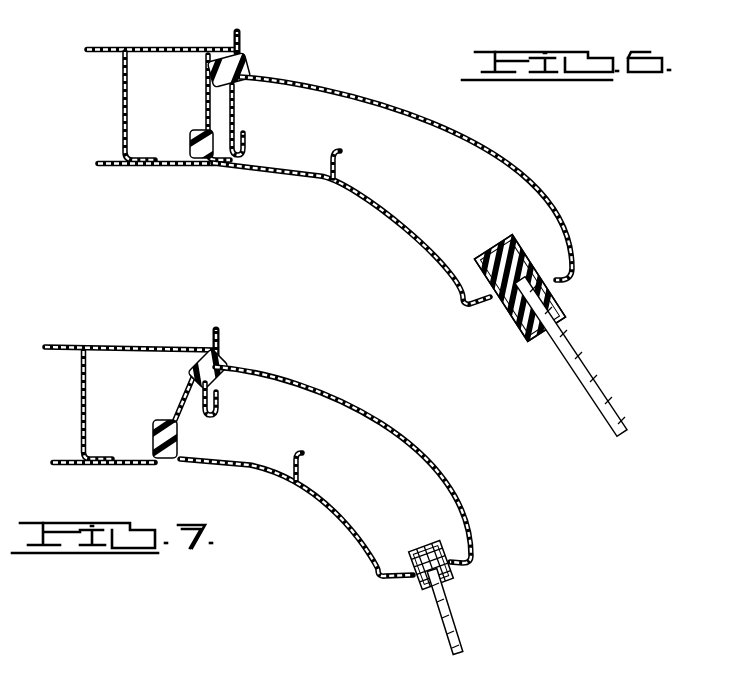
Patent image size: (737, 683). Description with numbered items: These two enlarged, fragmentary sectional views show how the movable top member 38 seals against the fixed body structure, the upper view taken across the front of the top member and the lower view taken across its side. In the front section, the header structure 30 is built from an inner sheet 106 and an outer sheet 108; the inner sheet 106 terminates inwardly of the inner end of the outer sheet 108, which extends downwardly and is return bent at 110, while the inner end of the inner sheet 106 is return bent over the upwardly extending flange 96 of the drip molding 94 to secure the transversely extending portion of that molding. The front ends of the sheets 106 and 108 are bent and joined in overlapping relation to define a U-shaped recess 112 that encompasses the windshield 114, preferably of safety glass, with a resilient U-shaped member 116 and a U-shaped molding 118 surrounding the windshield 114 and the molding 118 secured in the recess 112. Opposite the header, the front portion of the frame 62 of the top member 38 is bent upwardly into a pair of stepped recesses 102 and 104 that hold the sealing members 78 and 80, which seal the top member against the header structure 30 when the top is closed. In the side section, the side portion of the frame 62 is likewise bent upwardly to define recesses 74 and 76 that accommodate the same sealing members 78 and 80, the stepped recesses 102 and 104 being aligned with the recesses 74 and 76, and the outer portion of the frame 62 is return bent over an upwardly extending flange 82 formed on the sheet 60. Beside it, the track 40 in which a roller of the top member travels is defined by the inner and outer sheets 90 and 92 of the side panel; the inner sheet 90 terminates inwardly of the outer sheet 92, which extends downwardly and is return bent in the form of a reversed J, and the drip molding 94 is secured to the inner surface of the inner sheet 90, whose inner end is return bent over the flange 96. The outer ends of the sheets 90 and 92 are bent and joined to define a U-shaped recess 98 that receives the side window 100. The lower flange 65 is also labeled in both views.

In FIG. 6, the header structure 30 is at (320, 78).
In FIG. 6, the top member 38 is at (131, 48).
In FIG. 7, the track 40 is at (222, 401).
In FIG. 7, the sheet 60 is at (142, 322).
In FIG. 6, the frame 62 is at (180, 168).
In FIG. 7, the frame 62 is at (90, 400).
In FIG. 6, the lower flange 65 is at (134, 168).
In FIG. 7, the lower flange 65 is at (87, 463).
In FIG. 7, the recess 74 is at (156, 463).
In FIG. 7, the recess 76 is at (193, 386).
In FIG. 6, the sealing member 78 is at (197, 166).
In FIG. 7, the sealing member 78 is at (163, 463).
In FIG. 6, the sealing member 80 is at (242, 60).
In FIG. 7, the sealing member 80 is at (226, 359).
In FIG. 7, the flange 82 is at (221, 331).
In FIG. 7, the inner sheet 90 is at (320, 503).
In FIG. 7, the outer sheet 92 is at (367, 408).
In FIG. 6, the drip molding 94 is at (342, 160).
In FIG. 7, the drip molding 94 is at (305, 467).
In FIG. 6, the flange 96 is at (224, 166).
In FIG. 7, the flange 96 is at (182, 450).
In FIG. 7, the U-shaped recess 98 is at (432, 545).
In FIG. 7, the side window 100 is at (458, 628).
In FIG. 6, the stepped recess 102 is at (190, 142).
In FIG. 6, the stepped recess 104 is at (207, 68).
In FIG. 6, the inner sheet 106 is at (392, 222).
In FIG. 6, the outer sheet 108 is at (384, 94).
In FIG. 6, the return bent portion 110 is at (241, 155).
In FIG. 6, the U-shaped recess 112 is at (497, 250).
In FIG. 6, the windshield 114 is at (598, 385).
In FIG. 6, the resilient U-shaped member 116 is at (562, 323).
In FIG. 6, the U-shaped molding 118 is at (562, 303).